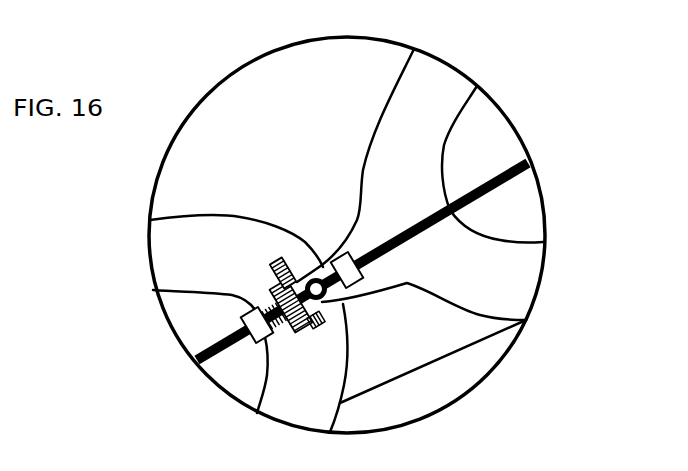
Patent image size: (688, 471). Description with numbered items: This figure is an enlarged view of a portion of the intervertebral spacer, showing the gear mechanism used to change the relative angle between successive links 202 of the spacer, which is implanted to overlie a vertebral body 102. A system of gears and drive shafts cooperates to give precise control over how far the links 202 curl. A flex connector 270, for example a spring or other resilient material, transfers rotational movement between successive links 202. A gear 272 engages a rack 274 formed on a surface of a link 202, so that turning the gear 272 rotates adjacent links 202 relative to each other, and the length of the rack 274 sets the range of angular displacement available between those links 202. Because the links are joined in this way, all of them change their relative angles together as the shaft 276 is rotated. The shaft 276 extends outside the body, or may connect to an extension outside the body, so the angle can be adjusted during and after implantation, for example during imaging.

The link 202 is at (432, 69).
The shaft 276 is at (492, 185).
The rack 274 is at (267, 261).
The flex connector 270 is at (261, 295).
The gear 272 is at (288, 341).
The vertebral body 102 is at (436, 395).